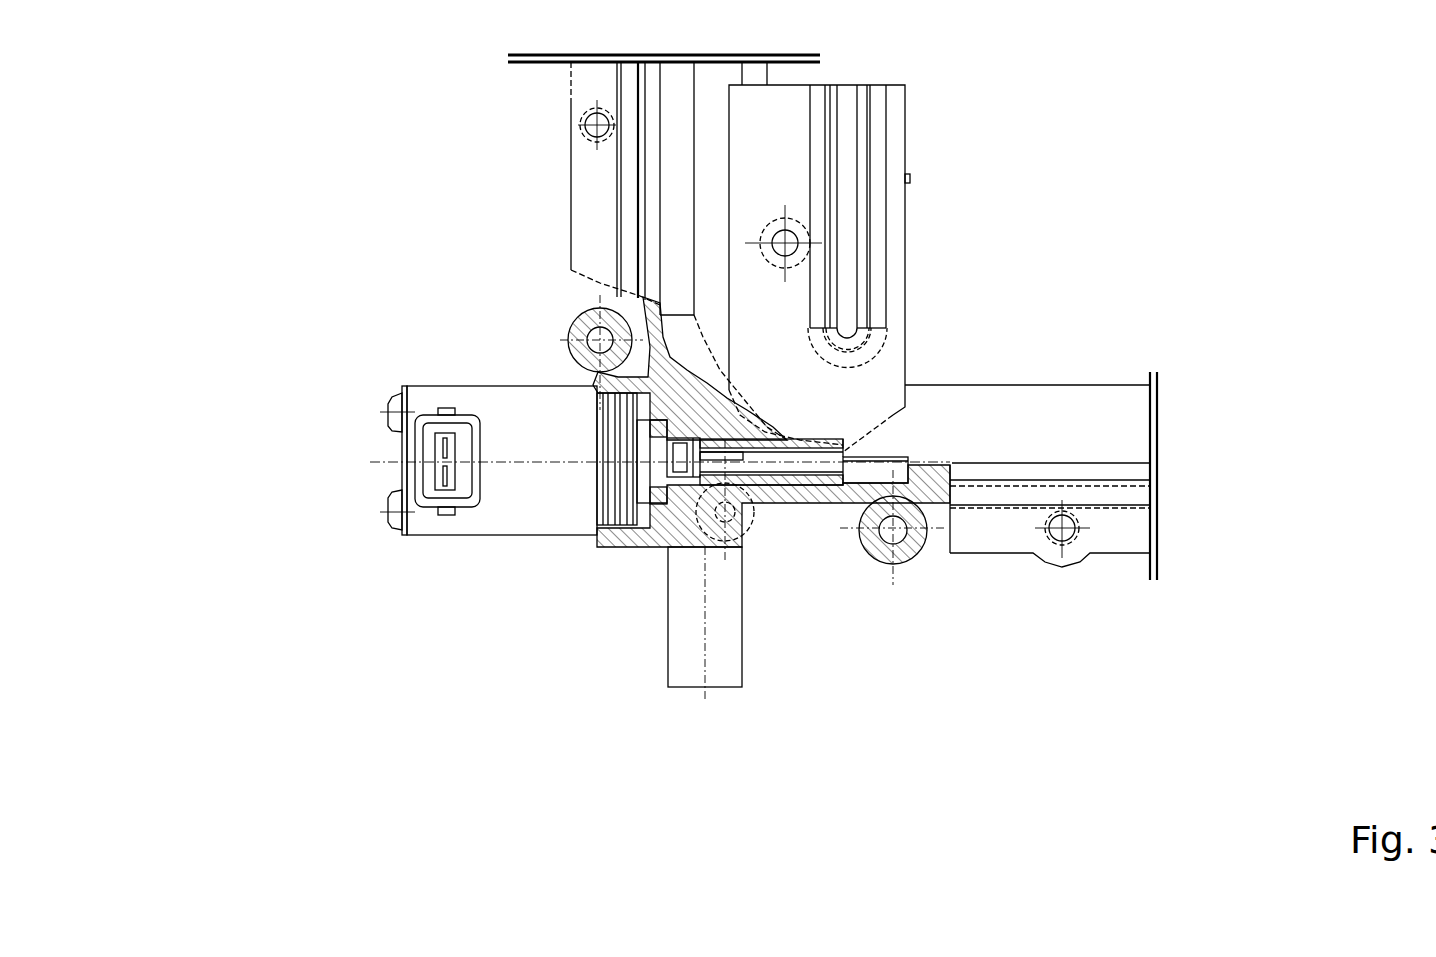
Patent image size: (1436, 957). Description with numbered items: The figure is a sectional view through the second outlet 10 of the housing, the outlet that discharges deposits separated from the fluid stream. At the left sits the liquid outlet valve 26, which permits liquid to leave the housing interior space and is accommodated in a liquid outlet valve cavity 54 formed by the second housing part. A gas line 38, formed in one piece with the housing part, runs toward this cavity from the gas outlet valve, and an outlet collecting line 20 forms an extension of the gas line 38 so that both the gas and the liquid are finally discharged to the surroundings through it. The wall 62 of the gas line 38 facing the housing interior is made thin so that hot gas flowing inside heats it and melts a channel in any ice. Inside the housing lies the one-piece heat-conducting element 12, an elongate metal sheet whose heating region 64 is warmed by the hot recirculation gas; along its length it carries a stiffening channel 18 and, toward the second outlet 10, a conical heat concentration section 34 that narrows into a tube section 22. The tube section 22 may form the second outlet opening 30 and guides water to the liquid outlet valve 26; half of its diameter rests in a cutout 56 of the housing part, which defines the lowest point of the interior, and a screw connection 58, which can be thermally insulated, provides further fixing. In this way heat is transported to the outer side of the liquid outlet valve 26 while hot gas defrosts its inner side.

The second outlet 10 is at (596, 560).
The heat-conducting element 12 is at (732, 124).
The stiffening channel 18 is at (830, 167).
The outlet collecting line 20 is at (681, 687).
The tube section 22 is at (772, 483).
The liquid outlet valve 26 is at (407, 448).
The second outlet opening 30 is at (795, 660).
The heat concentration section 34 is at (1000, 627).
The gas line 38 is at (695, 216).
The liquid outlet valve cavity 54 is at (643, 518).
The cutout 56 is at (903, 485).
The screw connection 58 is at (803, 233).
The wall 62 is at (709, 265).
The heating region 64 is at (443, 74).